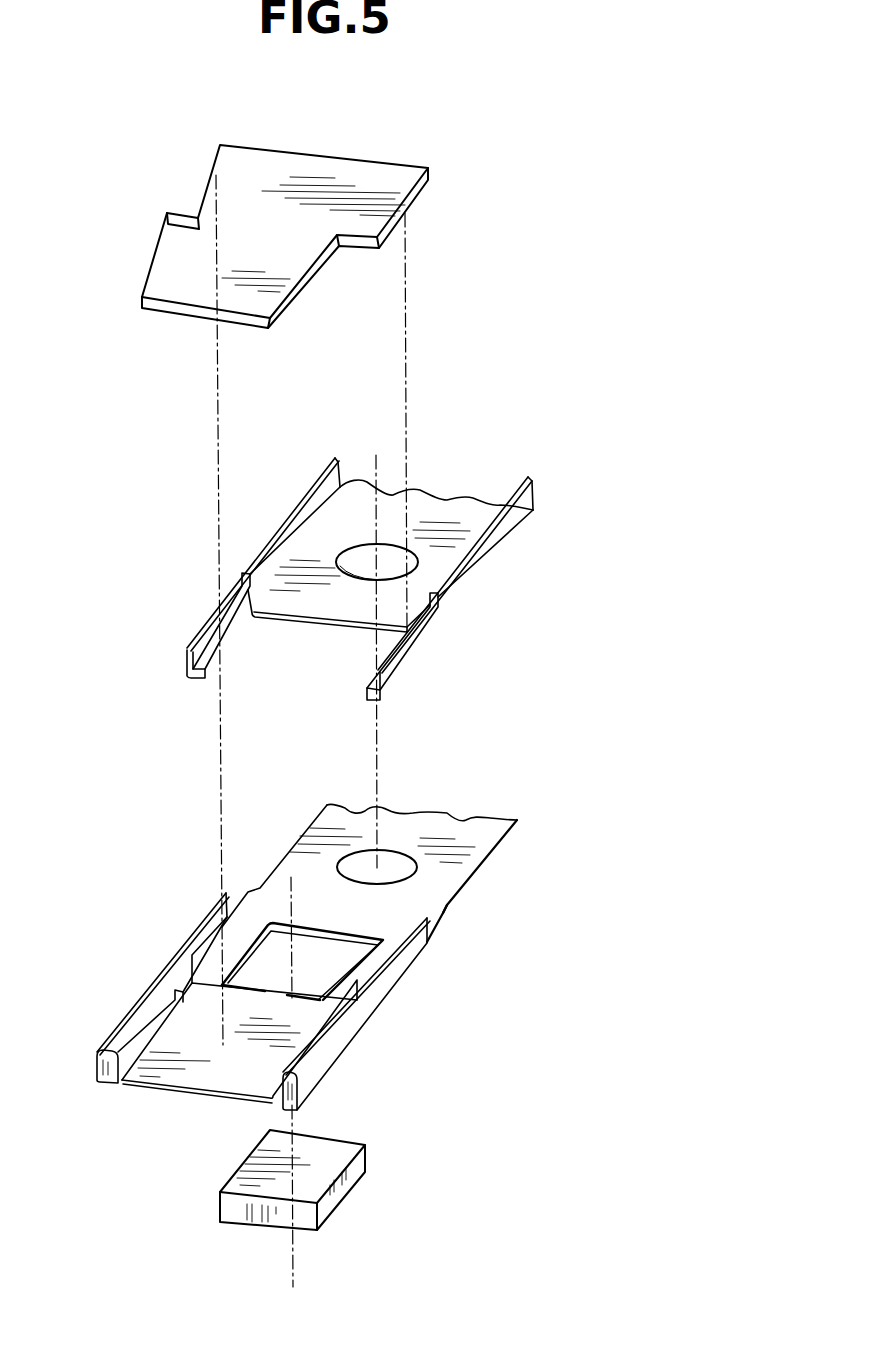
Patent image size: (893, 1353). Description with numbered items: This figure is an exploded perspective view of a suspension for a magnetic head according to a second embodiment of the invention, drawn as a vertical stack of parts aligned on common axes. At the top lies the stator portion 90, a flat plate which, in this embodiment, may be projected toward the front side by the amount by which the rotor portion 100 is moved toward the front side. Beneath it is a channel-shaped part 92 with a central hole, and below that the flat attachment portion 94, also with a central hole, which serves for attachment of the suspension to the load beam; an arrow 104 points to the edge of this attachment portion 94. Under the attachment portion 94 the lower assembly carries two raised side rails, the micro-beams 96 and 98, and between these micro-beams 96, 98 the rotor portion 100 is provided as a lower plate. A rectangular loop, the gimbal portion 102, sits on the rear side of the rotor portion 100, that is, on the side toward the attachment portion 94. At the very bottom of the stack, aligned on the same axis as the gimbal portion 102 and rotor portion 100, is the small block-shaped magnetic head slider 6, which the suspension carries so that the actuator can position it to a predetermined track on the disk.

The magnetic head slider 6 is at (343, 1197).
The stator portion 90 is at (168, 257).
The holder bracket 92 is at (435, 513).
The attachment portion 94 is at (453, 830).
The micro-beam 96 is at (112, 1027).
The micro-beam 98 is at (332, 1063).
The rotor portion 100 is at (175, 1098).
The gimbal portion 102 is at (313, 970).
The edge 104 is at (459, 903).